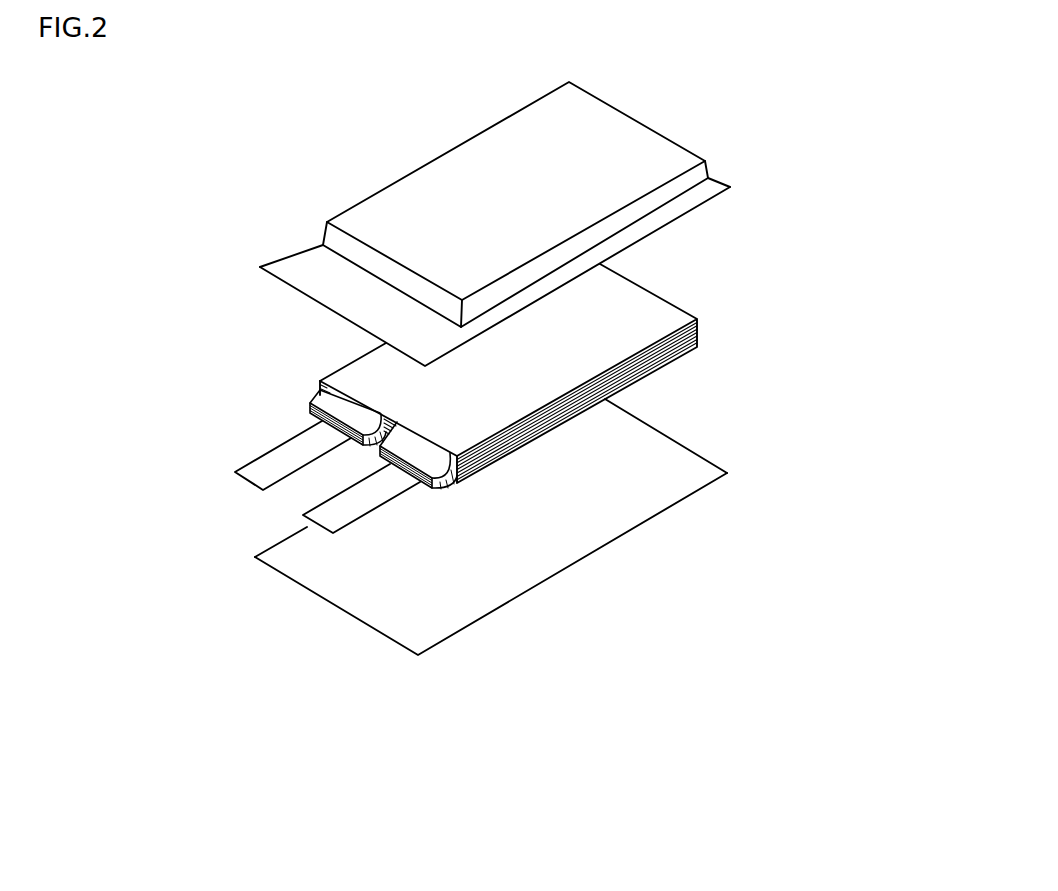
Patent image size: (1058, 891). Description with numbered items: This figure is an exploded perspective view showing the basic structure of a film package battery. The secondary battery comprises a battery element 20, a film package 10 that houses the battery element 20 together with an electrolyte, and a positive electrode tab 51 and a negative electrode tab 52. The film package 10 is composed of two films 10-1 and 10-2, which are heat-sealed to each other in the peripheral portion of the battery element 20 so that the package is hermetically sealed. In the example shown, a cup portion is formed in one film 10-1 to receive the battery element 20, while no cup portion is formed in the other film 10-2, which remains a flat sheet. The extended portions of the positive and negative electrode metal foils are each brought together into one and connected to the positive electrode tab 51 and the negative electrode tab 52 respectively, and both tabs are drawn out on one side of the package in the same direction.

The film package 10 is at (637, 112).
The film 10-1 is at (683, 158).
The film 10-2 is at (683, 500).
The battery element 20 is at (663, 288).
The positive electrode tab 51 is at (247, 467).
The negative electrode tab 52 is at (303, 514).